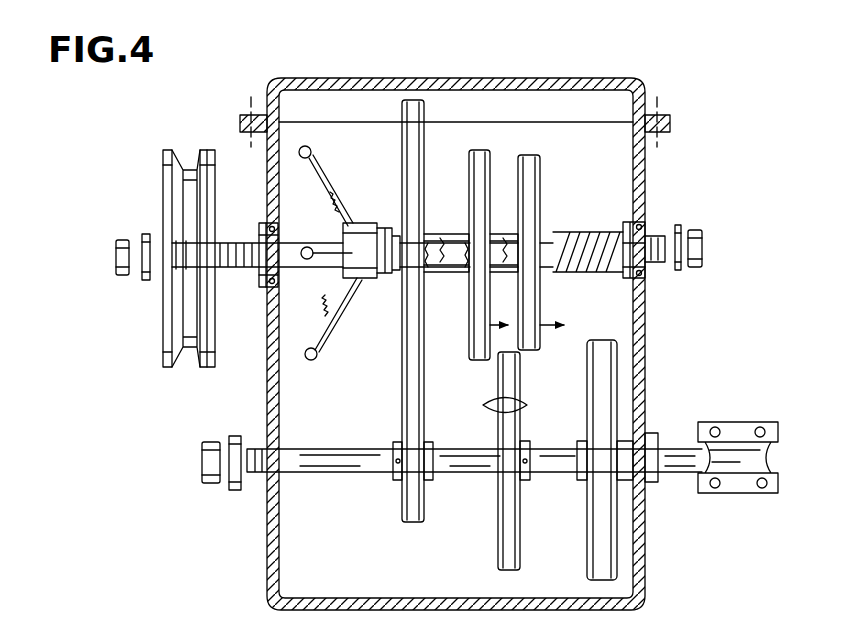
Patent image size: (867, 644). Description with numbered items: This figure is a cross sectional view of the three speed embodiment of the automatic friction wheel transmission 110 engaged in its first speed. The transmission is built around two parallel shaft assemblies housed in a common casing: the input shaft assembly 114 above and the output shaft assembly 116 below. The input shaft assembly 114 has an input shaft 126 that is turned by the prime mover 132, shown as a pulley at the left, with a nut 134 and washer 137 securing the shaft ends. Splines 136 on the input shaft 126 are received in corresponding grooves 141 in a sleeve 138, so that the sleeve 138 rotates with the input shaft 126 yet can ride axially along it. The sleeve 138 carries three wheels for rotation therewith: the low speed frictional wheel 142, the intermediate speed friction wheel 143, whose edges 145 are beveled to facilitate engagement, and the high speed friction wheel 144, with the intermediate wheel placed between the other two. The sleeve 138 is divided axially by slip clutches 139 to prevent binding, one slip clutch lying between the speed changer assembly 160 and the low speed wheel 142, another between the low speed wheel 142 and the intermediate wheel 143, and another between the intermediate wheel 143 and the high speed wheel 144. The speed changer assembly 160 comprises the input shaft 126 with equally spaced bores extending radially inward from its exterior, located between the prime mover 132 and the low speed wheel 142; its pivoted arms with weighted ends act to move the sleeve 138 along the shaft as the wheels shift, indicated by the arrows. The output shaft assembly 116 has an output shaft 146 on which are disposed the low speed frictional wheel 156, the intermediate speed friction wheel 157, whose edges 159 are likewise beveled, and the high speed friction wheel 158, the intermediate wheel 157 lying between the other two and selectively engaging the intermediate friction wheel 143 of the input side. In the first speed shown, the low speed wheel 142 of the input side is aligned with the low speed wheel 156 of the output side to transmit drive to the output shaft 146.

The automatic friction wheel transmission 110 is at (262, 78).
The input shaft assembly 114 is at (401, 196).
The output shaft assembly 116 is at (345, 449).
The input shaft 126 is at (278, 235).
The prime mover 132 is at (163, 175).
The nut 134 is at (128, 240).
The splines 136 is at (275, 290).
The washer 137 is at (147, 282).
The sleeve 138 is at (345, 268).
The slip clutches 139 is at (430, 234).
The grooves 141 is at (395, 284).
The low speed frictional wheel 142 is at (413, 100).
The intermediate speed friction wheel 143 is at (480, 150).
The high speed friction wheel 144 is at (530, 158).
The beveled edges 145 is at (490, 165).
The output shaft 146 is at (352, 478).
The low speed frictional wheel 156 is at (418, 522).
The intermediate speed friction wheel 157 is at (510, 354).
The high speed friction wheel 158 is at (605, 342).
The beveled edges 159 is at (383, 405).
The speed changer assembly 160 is at (307, 153).